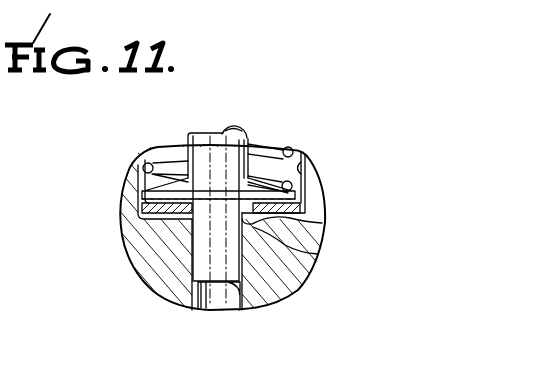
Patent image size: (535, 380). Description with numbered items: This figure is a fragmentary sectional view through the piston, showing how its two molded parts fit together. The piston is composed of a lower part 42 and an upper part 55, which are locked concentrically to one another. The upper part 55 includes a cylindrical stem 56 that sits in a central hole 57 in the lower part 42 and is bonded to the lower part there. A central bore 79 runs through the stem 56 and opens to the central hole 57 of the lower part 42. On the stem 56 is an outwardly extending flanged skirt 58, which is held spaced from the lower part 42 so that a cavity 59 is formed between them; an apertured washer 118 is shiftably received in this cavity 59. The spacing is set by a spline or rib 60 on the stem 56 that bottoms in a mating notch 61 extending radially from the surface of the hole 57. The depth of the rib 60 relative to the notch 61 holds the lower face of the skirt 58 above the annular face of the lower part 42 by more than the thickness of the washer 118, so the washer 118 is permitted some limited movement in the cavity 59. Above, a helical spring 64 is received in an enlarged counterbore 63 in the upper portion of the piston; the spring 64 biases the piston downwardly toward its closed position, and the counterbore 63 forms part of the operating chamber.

The lower part 42 is at (145, 277).
The upper part 55 is at (257, 123).
The cylindrical stem 56 is at (249, 139).
The central hole 57 is at (227, 310).
The flanged skirt 58 is at (134, 181).
The cavity 59 is at (147, 221).
The rib 60 is at (322, 223).
The notch 61 is at (318, 254).
The counterbore 63 is at (305, 159).
The helical spring 64 is at (153, 158).
The central bore 79 is at (222, 131).
The washer 118 is at (303, 206).